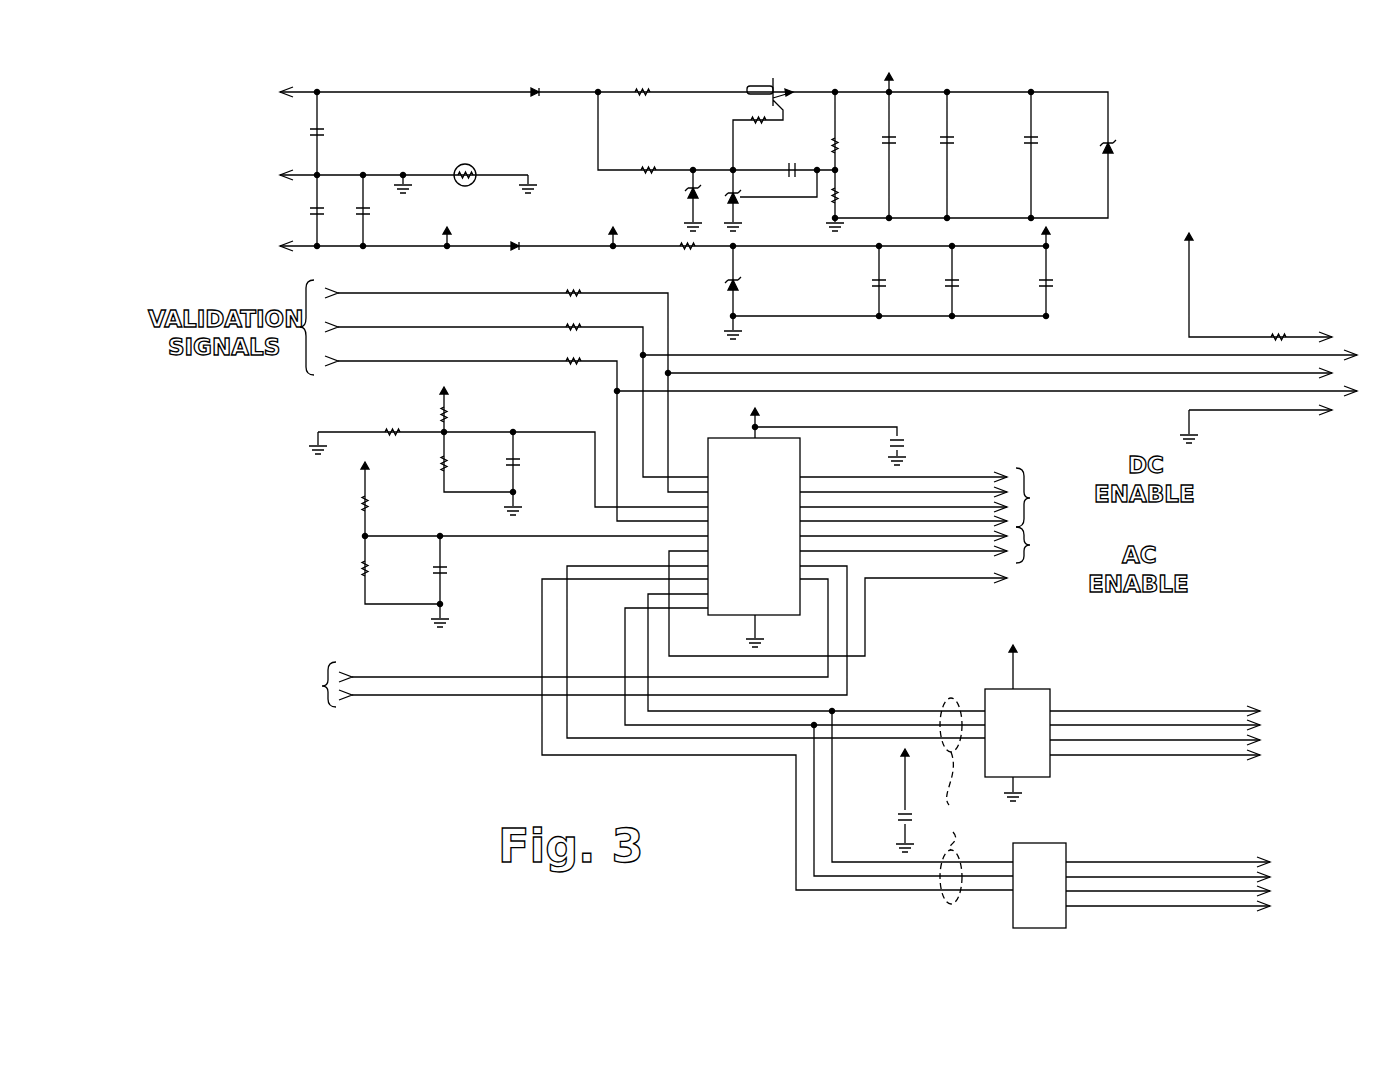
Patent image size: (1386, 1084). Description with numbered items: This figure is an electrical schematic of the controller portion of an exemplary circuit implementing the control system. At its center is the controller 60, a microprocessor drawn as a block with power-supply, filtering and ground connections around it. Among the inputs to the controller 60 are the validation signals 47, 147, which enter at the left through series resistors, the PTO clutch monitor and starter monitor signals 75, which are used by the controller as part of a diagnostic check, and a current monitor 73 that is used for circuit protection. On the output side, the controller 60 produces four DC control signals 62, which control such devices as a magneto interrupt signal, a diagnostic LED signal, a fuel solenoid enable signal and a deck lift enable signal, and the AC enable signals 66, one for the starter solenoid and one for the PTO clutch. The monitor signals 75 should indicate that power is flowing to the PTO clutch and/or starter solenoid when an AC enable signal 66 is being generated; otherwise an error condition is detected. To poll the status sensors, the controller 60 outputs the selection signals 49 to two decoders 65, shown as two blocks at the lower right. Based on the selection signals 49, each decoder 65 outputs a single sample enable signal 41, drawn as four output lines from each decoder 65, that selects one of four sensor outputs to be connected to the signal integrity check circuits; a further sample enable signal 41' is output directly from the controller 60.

The validation signal 47 is at (400, 293).
The validation signal 147 is at (438, 361).
The current monitor 73 is at (362, 481).
The controller 60 is at (760, 466).
The DC control signals 62 is at (1030, 498).
The AC enable signals 66 is at (1030, 545).
The sample enable signal 41' is at (838, 603).
The PTO clutch monitor and starter monitor signals 75 is at (322, 688).
The selection signals 49 is at (950, 801).
The decoder 65 is at (1030, 762).
The sample enable signal 41 is at (1160, 794).